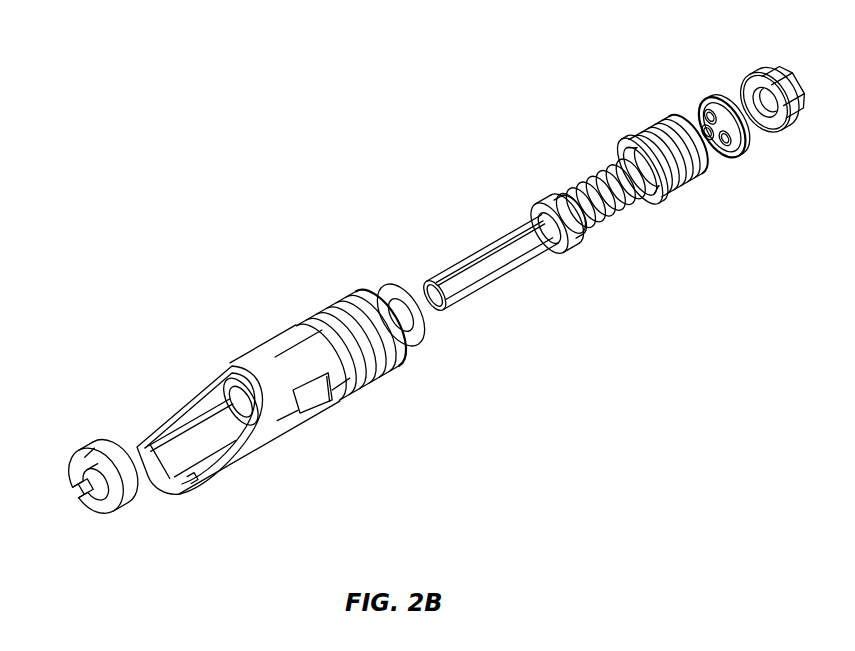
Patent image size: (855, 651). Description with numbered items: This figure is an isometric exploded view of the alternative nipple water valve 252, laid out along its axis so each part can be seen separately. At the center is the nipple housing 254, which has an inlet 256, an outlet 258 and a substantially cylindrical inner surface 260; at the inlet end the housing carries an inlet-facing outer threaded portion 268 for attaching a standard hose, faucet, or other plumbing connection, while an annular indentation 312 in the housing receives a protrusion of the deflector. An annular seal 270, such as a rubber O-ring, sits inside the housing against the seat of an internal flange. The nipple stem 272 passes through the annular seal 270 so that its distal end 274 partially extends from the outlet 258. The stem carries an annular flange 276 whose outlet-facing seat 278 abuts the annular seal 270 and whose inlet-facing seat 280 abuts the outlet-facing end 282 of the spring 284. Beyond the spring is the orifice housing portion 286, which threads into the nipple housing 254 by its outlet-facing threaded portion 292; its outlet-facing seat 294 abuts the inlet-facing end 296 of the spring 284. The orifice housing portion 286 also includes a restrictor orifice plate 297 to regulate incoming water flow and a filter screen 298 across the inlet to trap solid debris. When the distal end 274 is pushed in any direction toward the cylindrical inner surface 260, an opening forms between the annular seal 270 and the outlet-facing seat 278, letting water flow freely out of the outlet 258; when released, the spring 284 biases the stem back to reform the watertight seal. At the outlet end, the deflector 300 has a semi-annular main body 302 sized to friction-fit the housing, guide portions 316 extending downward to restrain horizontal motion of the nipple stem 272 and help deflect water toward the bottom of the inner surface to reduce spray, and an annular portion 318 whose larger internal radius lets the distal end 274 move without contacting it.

The alternative nipple water valve 252 is at (284, 165).
The nipple housing 254 is at (268, 332).
The inlet 256 is at (363, 295).
The outlet 258 is at (165, 490).
The cylindrical inner surface 260 is at (177, 445).
The inlet-facing outer threaded portion 268 is at (380, 370).
The annular seal 270 is at (418, 337).
The nipple stem 272 is at (497, 263).
The distal end 274 is at (420, 282).
The annular flange 276 is at (540, 198).
The outlet-facing seat 278 is at (538, 202).
The inlet-facing seat 280 is at (555, 195).
The outlet-facing end 282 is at (583, 232).
The spring 284 is at (608, 223).
The orifice housing portion 286 is at (690, 187).
The outlet-facing threaded portion 292 is at (667, 205).
The outlet-facing seat 294 is at (627, 160).
The inlet-facing end 296 is at (637, 207).
The restrictor orifice plate 297 is at (738, 150).
The filter screen 298 is at (755, 73).
The deflector 300 is at (95, 447).
The main body 302 is at (80, 467).
The annular indentation 312 is at (230, 398).
The guide portions 316 is at (72, 487).
The annular portion 318 is at (97, 503).